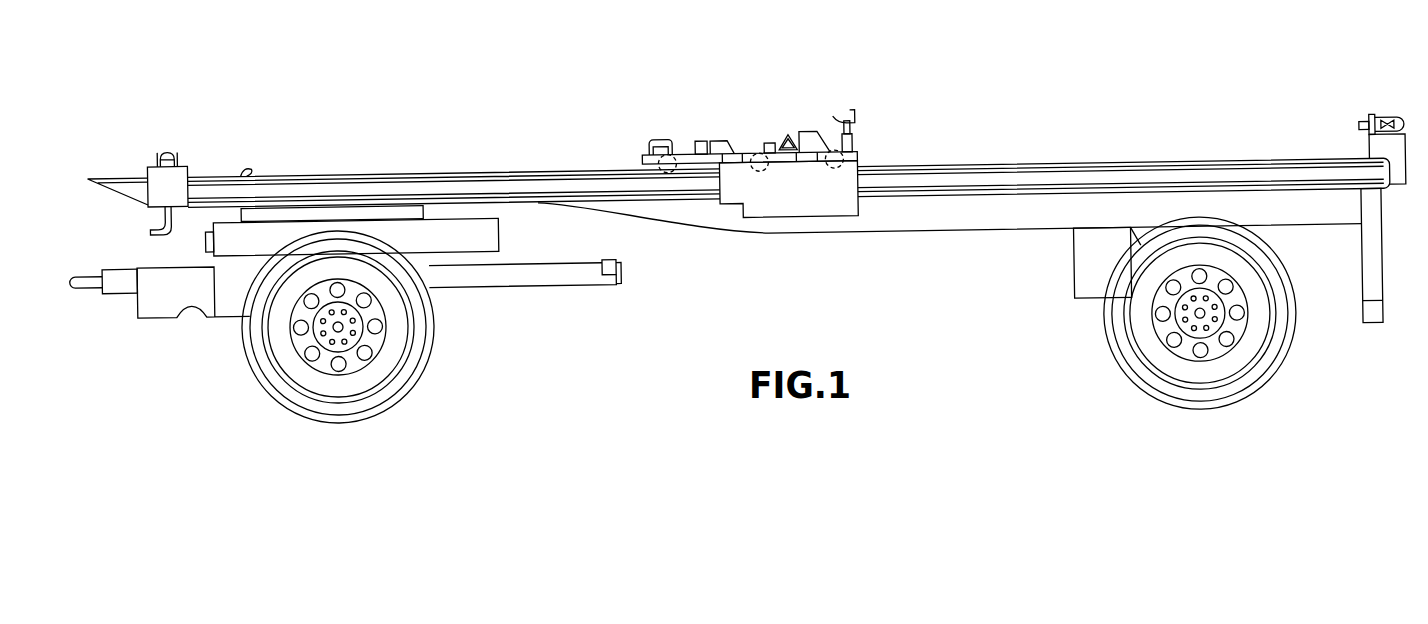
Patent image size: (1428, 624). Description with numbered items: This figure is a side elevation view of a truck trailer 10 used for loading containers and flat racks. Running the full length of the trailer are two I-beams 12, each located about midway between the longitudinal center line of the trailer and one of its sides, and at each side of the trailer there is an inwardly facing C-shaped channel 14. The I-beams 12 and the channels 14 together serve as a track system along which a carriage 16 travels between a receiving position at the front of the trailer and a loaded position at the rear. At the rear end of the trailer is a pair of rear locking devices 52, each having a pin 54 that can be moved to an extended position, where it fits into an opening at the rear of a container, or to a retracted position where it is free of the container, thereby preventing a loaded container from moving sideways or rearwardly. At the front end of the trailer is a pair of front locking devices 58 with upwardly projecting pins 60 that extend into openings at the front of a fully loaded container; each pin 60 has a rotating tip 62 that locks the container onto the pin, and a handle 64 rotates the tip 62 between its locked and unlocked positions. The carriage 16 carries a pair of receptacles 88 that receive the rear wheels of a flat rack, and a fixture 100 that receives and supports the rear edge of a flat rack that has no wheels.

The truck trailer 10 is at (1178, 132).
The I-beam 12 is at (687, 232).
The C-shaped channel 14 is at (1072, 178).
The carriage 16 is at (872, 153).
The rear locking device 52 is at (1397, 104).
The pin 54 is at (1360, 126).
The front locking device 58 is at (147, 138).
The pin 60 is at (186, 160).
The rotating tip 62 is at (172, 150).
The handle 64 is at (150, 233).
The receptacle 88 is at (691, 133).
The fixture 100 is at (855, 112).